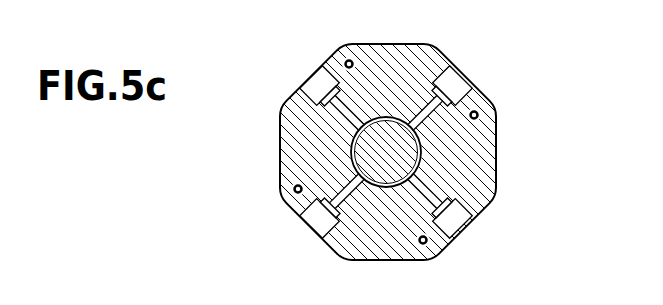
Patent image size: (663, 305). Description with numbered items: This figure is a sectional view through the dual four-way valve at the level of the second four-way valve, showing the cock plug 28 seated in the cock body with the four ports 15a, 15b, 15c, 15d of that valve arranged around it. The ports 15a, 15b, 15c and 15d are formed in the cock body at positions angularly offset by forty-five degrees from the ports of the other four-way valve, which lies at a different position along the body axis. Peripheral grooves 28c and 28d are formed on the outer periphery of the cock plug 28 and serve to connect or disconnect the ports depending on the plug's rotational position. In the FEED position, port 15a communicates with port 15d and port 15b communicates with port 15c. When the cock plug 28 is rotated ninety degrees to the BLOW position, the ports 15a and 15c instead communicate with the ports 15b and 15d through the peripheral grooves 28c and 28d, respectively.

The cock plug 28 is at (400, 117).
The peripheral groove 28c is at (351, 142).
The peripheral groove 28d is at (421, 157).
The port 15a is at (318, 82).
The port 15b is at (460, 84).
The port 15c is at (457, 226).
The port 15d is at (318, 222).